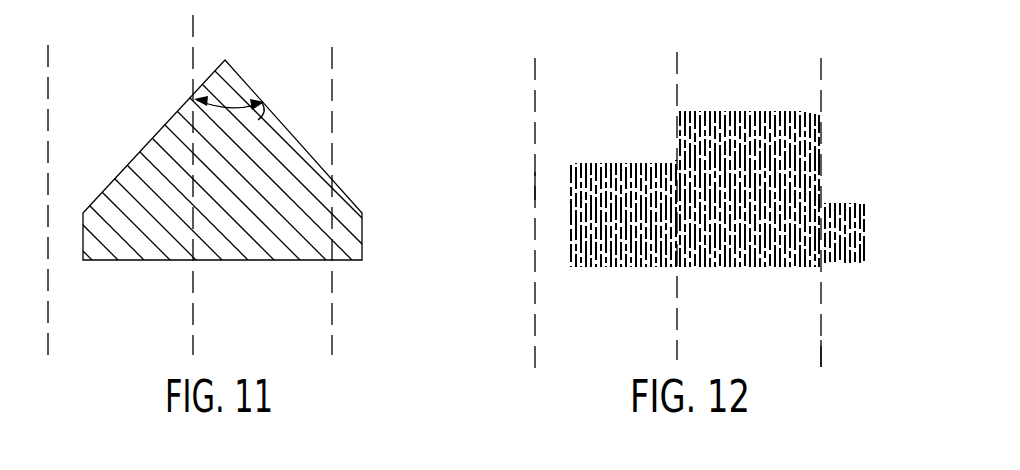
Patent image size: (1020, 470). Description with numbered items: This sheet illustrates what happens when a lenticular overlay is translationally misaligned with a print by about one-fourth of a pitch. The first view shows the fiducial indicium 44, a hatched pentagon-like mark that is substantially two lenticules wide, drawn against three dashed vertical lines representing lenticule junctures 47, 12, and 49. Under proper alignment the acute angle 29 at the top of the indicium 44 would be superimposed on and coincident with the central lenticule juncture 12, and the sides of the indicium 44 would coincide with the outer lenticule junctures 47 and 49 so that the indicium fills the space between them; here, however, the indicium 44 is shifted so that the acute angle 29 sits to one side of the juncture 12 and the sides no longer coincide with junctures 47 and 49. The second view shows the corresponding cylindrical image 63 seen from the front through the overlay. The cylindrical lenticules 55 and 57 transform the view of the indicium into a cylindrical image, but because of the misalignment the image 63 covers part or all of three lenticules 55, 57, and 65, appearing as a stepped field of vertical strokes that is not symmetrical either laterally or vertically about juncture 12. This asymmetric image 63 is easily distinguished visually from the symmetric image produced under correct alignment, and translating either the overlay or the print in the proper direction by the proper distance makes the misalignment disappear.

In FIG. 11, the lenticule juncture 12 is at (193, 30).
In FIG. 12, the lenticule juncture 12 is at (677, 72).
In FIG. 11, the lenticule juncture 47 is at (48, 75).
In FIG. 12, the lenticule juncture 47 is at (535, 77).
In FIG. 11, the lenticule juncture 49 is at (332, 78).
In FIG. 12, the lenticule juncture 49 is at (821, 77).
In FIG. 11, the acute angle 29 is at (262, 112).
In FIG. 11, the fiducial indicium 44 is at (302, 175).
In FIG. 12, the cylindrical lenticule 55 is at (632, 338).
In FIG. 12, the cylindrical lenticule 57 is at (777, 338).
In FIG. 12, the cylindrical image 63 is at (526, 191).
In FIG. 12, the lenticule 65 is at (840, 333).